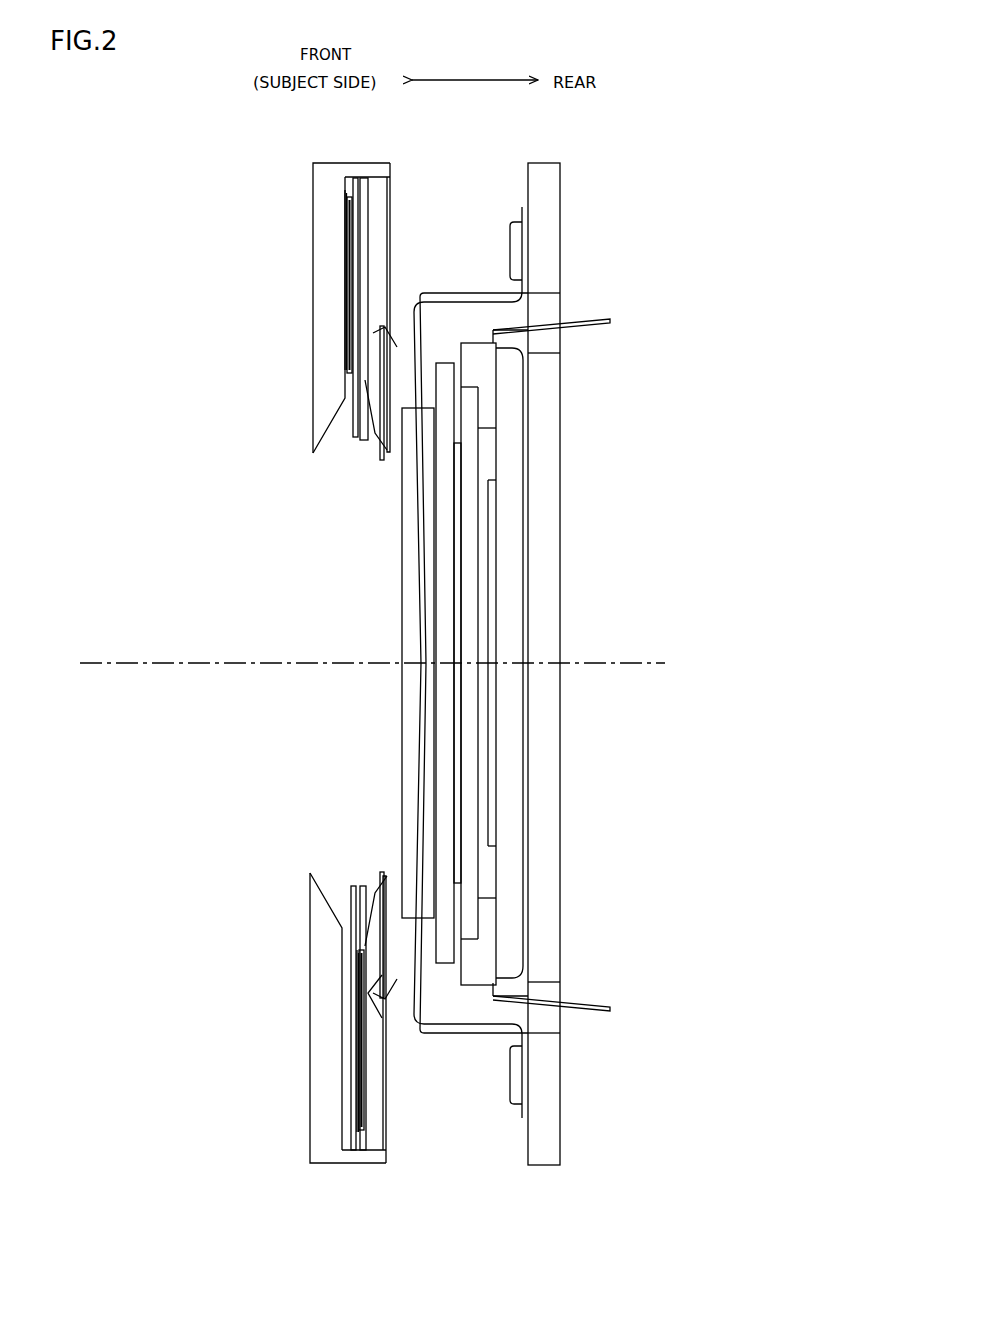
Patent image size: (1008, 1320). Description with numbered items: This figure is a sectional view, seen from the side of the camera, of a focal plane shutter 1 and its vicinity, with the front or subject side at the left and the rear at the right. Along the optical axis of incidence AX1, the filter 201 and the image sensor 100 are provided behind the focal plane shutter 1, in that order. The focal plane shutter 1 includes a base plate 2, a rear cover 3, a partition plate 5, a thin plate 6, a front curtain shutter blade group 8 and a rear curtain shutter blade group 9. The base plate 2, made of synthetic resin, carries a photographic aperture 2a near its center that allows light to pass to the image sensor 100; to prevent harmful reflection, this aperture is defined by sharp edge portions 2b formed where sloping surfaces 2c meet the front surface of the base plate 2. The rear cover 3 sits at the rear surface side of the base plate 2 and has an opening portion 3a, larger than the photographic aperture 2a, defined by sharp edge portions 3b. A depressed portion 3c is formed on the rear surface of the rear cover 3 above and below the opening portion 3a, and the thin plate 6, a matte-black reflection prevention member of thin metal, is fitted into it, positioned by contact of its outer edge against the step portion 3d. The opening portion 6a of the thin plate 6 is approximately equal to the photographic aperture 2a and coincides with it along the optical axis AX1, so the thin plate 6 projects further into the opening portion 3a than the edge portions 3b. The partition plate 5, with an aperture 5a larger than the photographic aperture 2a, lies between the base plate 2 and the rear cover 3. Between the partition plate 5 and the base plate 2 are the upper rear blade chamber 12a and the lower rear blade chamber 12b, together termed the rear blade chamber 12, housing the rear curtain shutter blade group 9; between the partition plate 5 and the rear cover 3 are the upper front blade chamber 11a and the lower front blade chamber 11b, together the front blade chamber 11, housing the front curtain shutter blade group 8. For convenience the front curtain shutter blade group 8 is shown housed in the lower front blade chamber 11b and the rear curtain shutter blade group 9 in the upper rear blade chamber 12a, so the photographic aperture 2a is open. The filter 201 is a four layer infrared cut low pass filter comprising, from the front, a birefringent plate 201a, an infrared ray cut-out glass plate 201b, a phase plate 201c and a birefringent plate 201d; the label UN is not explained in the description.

The focal plane shutter 1 is at (232, 192).
The base plate 2 is at (292, 663).
The photographic aperture 2a is at (292, 663).
The edge portions 2b is at (312, 452).
The sloping surfaces 2c is at (344, 406).
The rear cover 3 is at (420, 662).
The opening portion 3a is at (351, 663).
The edge portions 3b is at (387, 452).
The depressed portion 3c is at (372, 333).
The step portion 3d is at (396, 345).
The partition plate 5 is at (355, 222).
The aperture 5a is at (356, 440).
The thin plate 6 is at (386, 352).
The opening portion 6a is at (383, 462).
The front curtain shutter blade group 8 is at (363, 1112).
The rear curtain shutter blade group 9 is at (348, 270).
The front blade chamber 11 is at (422, 695).
The upper front blade chamber 11a is at (363, 235).
The lower front blade chamber 11b is at (361, 1152).
The rear blade chamber 12 is at (277, 628).
The upper rear blade chamber 12a is at (345, 184).
The lower rear blade chamber 12b is at (347, 1106).
The image sensor 100 is at (512, 400).
The filter 201 is at (572, 664).
The birefringent plate 201a is at (408, 700).
The infrared ray cut-out glass plate 201b is at (422, 710).
The phase plate 201c is at (430, 725).
The birefringent plate 201d is at (440, 743).
The optical axis of incidence AX1 is at (184, 668).
The unit direction arrow UN is at (478, 1037).